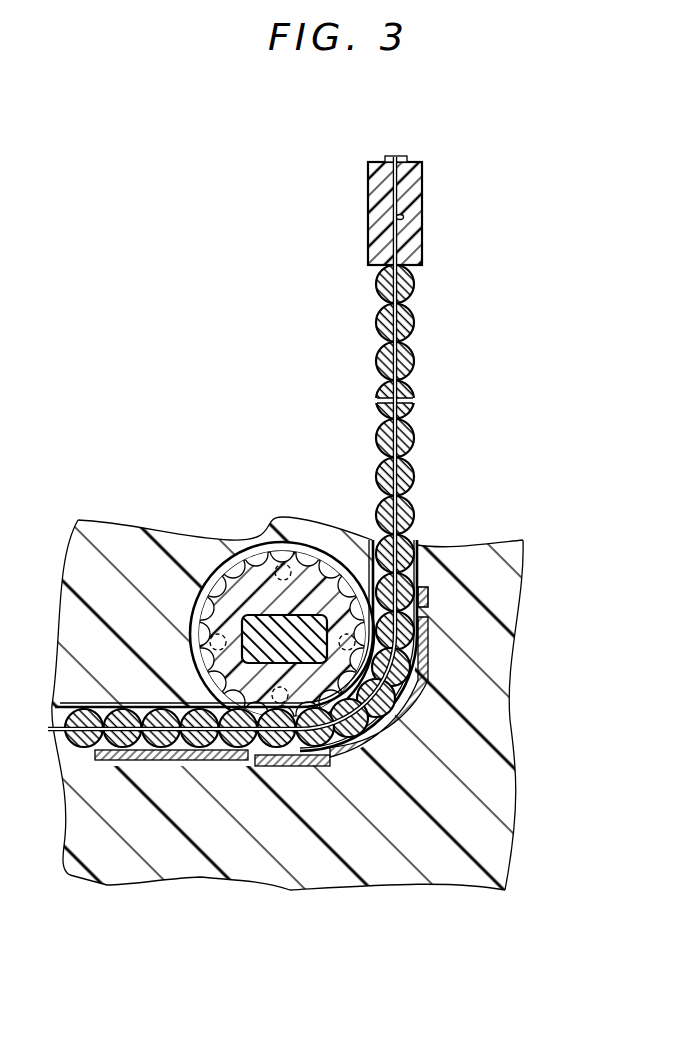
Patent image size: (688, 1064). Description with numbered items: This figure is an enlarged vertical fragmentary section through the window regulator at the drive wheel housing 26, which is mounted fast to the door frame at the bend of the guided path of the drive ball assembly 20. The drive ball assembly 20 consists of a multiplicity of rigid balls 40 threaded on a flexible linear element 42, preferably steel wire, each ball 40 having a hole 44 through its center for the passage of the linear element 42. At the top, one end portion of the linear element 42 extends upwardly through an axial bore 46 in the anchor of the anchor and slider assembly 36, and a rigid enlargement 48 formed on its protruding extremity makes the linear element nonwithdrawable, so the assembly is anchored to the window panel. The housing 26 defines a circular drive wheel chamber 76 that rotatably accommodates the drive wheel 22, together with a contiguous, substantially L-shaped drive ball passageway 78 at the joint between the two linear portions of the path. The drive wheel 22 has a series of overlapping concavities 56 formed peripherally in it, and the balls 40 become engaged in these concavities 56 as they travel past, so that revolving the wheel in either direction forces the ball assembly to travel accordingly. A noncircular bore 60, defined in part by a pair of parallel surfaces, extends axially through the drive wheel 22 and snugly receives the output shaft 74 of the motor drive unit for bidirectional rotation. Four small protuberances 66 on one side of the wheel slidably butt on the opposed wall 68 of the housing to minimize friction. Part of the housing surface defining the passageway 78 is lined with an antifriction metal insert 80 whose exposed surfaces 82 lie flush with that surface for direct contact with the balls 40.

The drive ball assembly 20 is at (370, 346).
The drive wheel 22 is at (202, 568).
The drive wheel housing 26 is at (121, 515).
The anchor and slider assembly 36 is at (412, 181).
The balls 40 is at (402, 405).
The flexible linear element 42 is at (412, 352).
The hole 44 is at (402, 452).
The axial bore 46 is at (398, 217).
The rigid enlargement 48 is at (393, 156).
The concavities 56 is at (214, 578).
The bore 60 is at (320, 598).
The small protuberances 66 is at (283, 563).
The wall 68 is at (296, 615).
The output shaft 74 is at (203, 650).
The drive wheel chamber 76 is at (241, 556).
The drive ball passageway 78 is at (422, 577).
The antifriction metal insert 80 is at (421, 721).
The exposed surfaces 82 is at (430, 648).